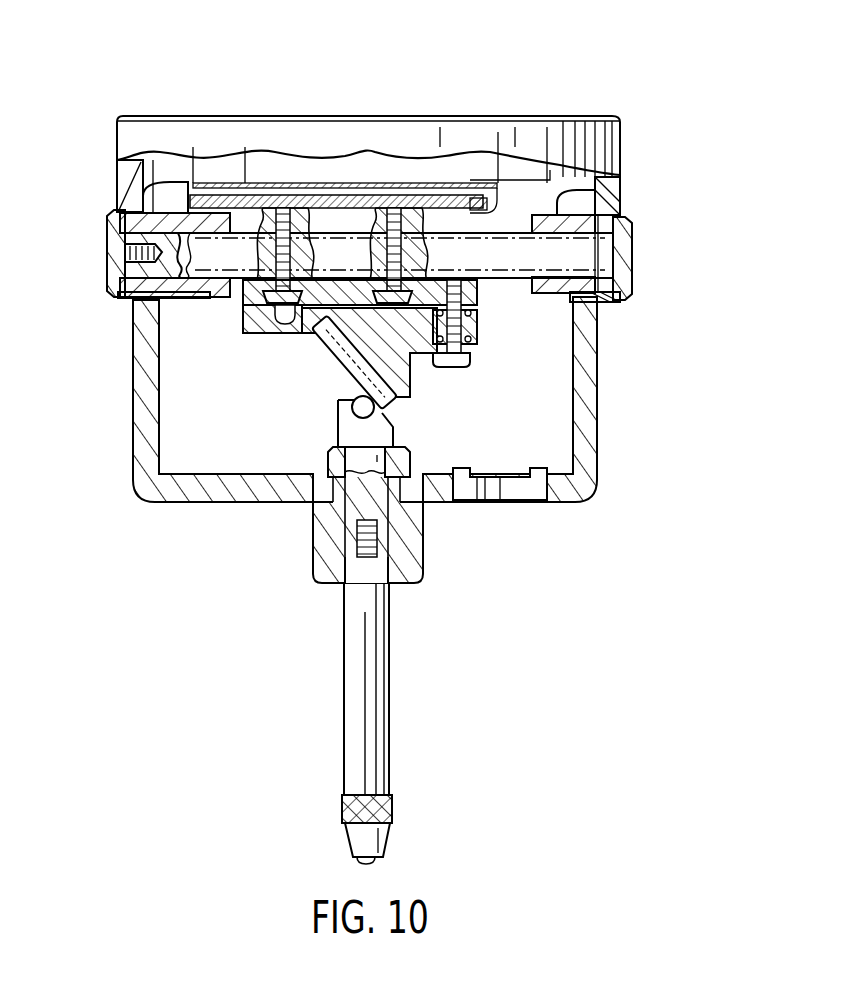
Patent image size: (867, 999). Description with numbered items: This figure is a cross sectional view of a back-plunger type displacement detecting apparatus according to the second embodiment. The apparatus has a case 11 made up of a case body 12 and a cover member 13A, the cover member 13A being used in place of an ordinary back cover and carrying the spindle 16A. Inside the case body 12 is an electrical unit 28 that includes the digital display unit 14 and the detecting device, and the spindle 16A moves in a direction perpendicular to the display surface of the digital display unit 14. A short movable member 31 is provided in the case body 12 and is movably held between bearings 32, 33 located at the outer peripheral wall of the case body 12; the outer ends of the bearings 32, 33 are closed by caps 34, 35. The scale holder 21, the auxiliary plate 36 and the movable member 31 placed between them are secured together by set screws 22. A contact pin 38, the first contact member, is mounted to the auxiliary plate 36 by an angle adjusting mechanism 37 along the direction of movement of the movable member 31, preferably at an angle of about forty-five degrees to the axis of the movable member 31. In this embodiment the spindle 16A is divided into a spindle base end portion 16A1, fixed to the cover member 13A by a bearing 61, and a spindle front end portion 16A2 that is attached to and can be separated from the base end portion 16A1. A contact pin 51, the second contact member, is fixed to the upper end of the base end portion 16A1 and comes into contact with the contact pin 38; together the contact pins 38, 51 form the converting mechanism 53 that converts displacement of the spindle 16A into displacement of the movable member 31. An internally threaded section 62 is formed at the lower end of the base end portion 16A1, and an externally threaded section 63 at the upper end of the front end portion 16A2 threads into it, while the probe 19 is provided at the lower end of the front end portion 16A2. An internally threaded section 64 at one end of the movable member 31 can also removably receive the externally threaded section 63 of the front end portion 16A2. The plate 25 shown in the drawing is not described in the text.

The case 11 is at (666, 80).
The case body 12 is at (626, 152).
The cover member 13A is at (581, 500).
The digital display unit 14 is at (276, 153).
The spindle 16A is at (385, 749).
The spindle base end portion 16A1 is at (382, 462).
The spindle front end portion 16A2 is at (382, 670).
The probe 19 is at (377, 860).
The scale holder 21 is at (493, 213).
The set screws 22 is at (270, 310).
The mounting plate 25 is at (478, 185).
The electrical unit 28 is at (355, 192).
The movable member 31 is at (512, 280).
The bearing 32 is at (143, 184).
The bearing 33 is at (620, 200).
The cap 34 is at (112, 234).
The cap 35 is at (632, 256).
The auxiliary plate 36 is at (242, 295).
The angle adjusting mechanism 37 is at (469, 368).
The contact pin 38 is at (338, 372).
The contact pin 51 is at (358, 416).
The converting mechanism 53 is at (255, 366).
The bearing 61 is at (338, 461).
The internally threaded section 62 is at (357, 541).
The externally threaded section 63 is at (368, 557).
The internally threaded section 64 is at (120, 258).